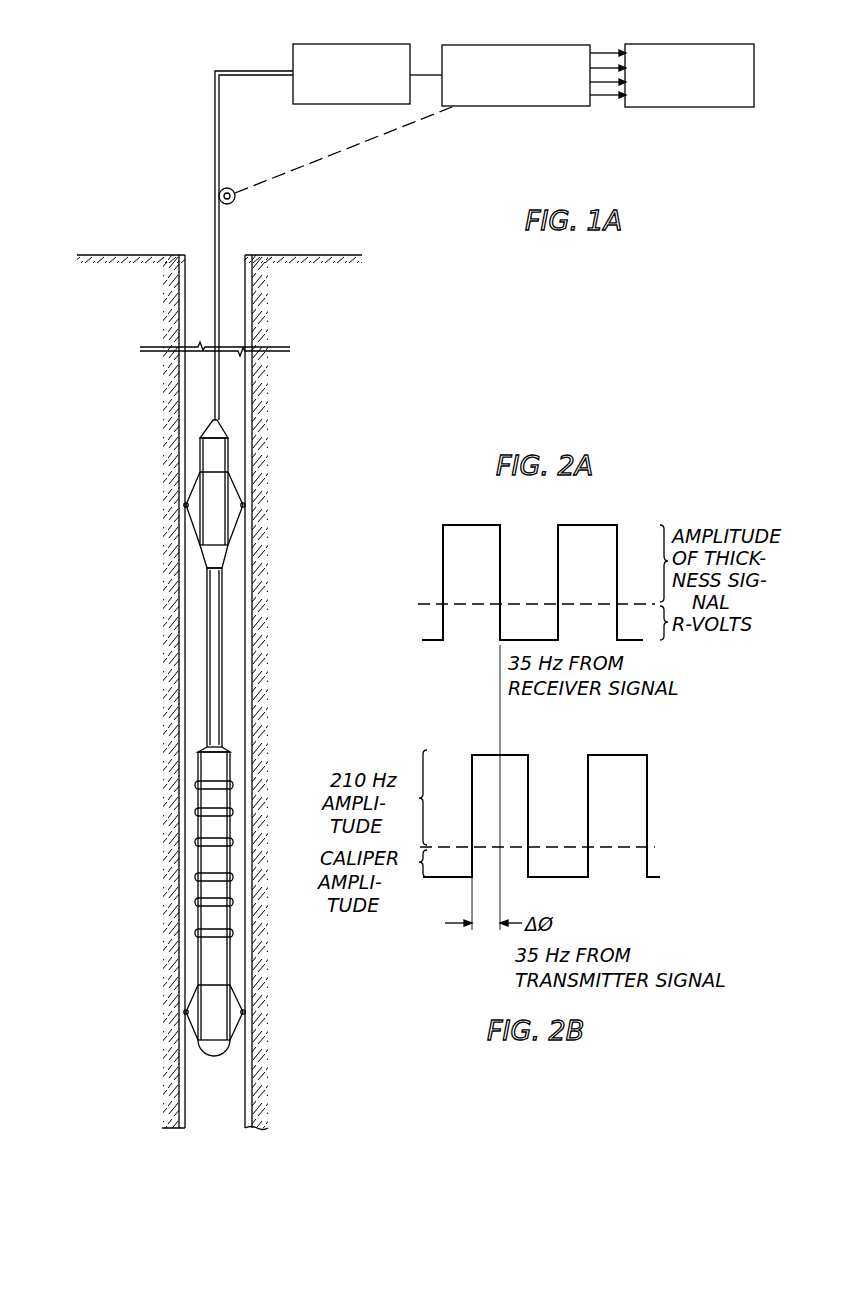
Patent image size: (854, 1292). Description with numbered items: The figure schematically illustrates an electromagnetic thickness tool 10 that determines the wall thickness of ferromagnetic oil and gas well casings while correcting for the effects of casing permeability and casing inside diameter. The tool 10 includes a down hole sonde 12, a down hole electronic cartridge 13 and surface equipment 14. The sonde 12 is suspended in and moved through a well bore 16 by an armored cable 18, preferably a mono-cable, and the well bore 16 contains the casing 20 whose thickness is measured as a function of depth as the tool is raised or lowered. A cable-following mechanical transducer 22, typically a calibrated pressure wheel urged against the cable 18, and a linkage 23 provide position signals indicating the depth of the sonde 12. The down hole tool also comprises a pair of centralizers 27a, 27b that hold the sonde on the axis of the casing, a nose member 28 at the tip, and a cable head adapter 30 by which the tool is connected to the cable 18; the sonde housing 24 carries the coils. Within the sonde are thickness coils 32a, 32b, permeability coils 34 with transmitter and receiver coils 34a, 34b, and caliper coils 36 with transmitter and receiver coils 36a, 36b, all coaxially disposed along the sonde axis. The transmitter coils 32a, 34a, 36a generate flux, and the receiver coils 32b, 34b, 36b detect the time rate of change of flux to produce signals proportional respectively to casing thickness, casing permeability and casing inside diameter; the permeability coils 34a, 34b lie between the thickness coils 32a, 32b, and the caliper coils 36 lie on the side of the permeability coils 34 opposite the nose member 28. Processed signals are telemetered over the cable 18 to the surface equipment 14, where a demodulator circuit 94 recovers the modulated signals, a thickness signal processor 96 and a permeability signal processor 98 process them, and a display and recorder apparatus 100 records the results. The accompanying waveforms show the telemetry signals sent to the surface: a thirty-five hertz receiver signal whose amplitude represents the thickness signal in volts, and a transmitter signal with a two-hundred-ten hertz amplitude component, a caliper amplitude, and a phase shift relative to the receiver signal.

The electromagnetic thickness tool 10 is at (160, 126).
The down hole sonde 12 is at (276, 745).
The electronic cartridge section 13 is at (279, 742).
The surface equipment 14 is at (525, 73).
The well bore 16 is at (199, 257).
The armored cable 18 is at (212, 210).
The casing 20 is at (177, 286).
The cable-following mechanical transducer 22 is at (236, 200).
The linkage 23 is at (366, 145).
The sonde housing 24 is at (195, 765).
The centralizer 27a is at (196, 995).
The centralizer 27b is at (196, 488).
The nose member 28 is at (213, 1052).
The cable head adapter 30 is at (203, 447).
The thickness transmitter coil 32a is at (195, 933).
The thickness receiver coil 32b is at (195, 842).
The permeability coils 34 is at (140, 887).
The permeability transmitter coil 34a is at (195, 902).
The permeability receiver coil 34b is at (195, 877).
The caliper coils 36 is at (142, 797).
The caliper transmitter coil 36a is at (196, 812).
The caliper receiver coil 36b is at (196, 786).
The demodulator circuit 94 is at (313, 105).
The thickness signal processor 96 is at (516, 95).
The permeability signal processor 98 is at (505, 107).
The display and recorder apparatus 100 is at (689, 94).